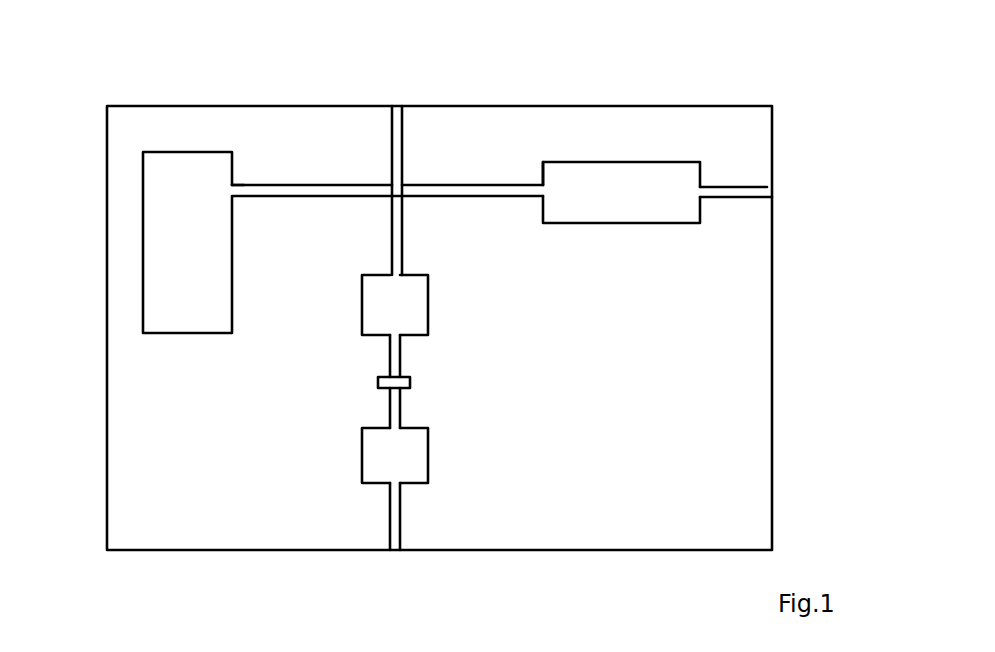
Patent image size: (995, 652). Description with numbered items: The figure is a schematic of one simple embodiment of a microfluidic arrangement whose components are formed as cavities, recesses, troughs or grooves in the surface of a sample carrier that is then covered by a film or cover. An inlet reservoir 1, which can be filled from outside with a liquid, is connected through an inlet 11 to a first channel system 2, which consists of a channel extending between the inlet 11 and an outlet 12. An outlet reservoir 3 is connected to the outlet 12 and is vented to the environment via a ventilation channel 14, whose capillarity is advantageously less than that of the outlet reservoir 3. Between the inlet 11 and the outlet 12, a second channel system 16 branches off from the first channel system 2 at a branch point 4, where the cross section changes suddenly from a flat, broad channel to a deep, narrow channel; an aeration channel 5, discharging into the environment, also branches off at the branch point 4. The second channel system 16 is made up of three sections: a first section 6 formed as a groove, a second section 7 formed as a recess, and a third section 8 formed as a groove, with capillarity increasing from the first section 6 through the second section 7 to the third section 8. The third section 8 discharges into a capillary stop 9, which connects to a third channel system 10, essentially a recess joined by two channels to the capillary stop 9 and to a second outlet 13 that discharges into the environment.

The inlet reservoir 1 is at (158, 243).
The first channel system 2 is at (300, 185).
The outlet reservoir 3 is at (617, 182).
The branch point 4 is at (402, 185).
The aeration channel 5 is at (403, 115).
The first section 6 is at (402, 233).
The second section 7 is at (420, 300).
The third section 8 is at (400, 353).
The capillary stop 9 is at (438, 402).
The third channel system 10 is at (413, 465).
The inlet 11 is at (235, 162).
The outlet 12 is at (545, 183).
The second outlet 13 is at (397, 550).
The ventilation channel 14 is at (757, 187).
The second channel system 16 is at (468, 312).